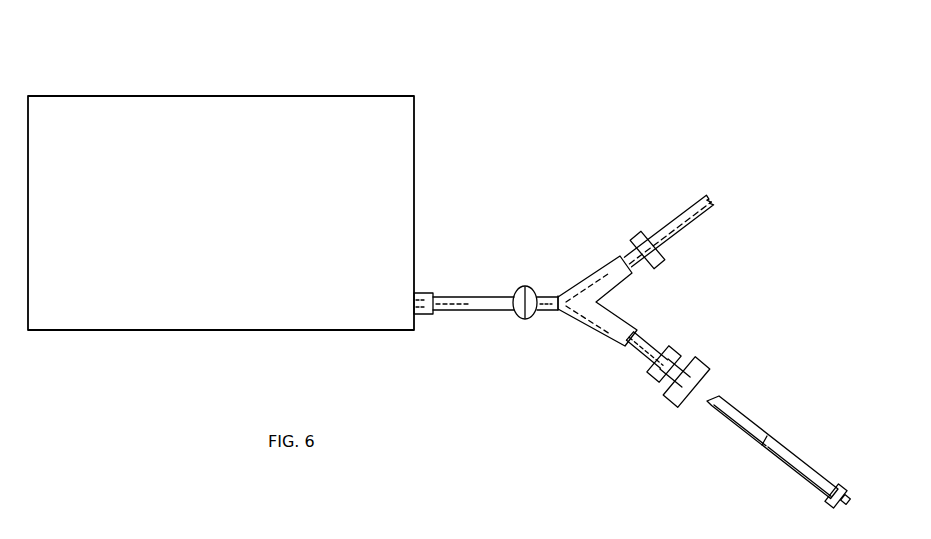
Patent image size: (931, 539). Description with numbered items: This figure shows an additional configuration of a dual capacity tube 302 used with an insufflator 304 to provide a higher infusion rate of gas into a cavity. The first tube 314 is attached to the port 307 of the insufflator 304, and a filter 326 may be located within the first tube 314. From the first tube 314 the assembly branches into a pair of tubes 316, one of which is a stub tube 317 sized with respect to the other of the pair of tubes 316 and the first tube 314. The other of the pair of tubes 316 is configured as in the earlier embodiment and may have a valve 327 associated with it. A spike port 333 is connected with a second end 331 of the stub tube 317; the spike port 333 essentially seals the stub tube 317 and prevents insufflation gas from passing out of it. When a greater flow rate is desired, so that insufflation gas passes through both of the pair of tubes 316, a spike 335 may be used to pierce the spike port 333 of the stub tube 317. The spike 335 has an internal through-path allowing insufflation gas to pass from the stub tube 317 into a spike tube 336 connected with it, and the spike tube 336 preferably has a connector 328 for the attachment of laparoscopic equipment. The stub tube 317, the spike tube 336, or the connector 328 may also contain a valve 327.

The insufflator 304 is at (333, 62).
The dual capacity tube 302 is at (610, 226).
The port 307 is at (426, 290).
The first tube 314 is at (478, 295).
The filter 326 is at (529, 287).
The pair of tubes 316 is at (665, 245).
The valve 327 is at (635, 233).
The stub tube 317 is at (645, 330).
The second end 331 is at (671, 388).
The spike port 333 is at (707, 364).
The spike 335 is at (746, 418).
The spike tube 336 is at (789, 452).
The connector 328 is at (844, 485).